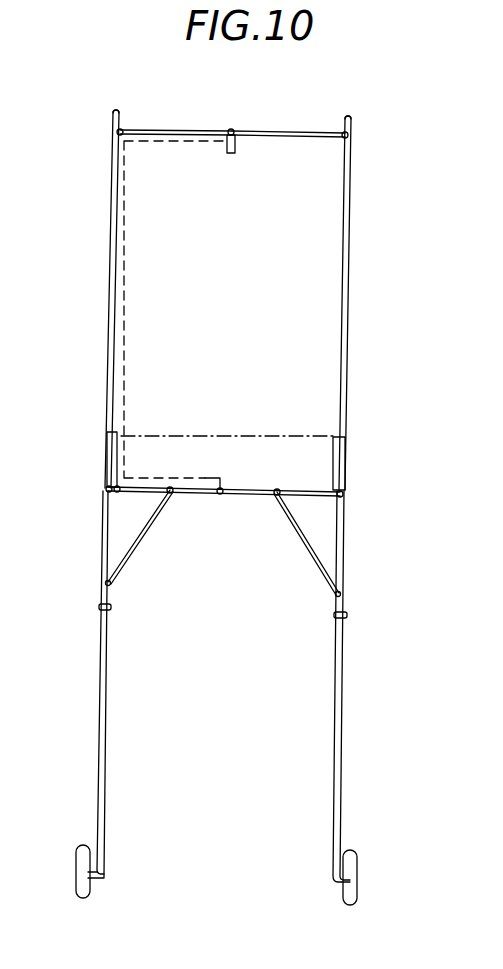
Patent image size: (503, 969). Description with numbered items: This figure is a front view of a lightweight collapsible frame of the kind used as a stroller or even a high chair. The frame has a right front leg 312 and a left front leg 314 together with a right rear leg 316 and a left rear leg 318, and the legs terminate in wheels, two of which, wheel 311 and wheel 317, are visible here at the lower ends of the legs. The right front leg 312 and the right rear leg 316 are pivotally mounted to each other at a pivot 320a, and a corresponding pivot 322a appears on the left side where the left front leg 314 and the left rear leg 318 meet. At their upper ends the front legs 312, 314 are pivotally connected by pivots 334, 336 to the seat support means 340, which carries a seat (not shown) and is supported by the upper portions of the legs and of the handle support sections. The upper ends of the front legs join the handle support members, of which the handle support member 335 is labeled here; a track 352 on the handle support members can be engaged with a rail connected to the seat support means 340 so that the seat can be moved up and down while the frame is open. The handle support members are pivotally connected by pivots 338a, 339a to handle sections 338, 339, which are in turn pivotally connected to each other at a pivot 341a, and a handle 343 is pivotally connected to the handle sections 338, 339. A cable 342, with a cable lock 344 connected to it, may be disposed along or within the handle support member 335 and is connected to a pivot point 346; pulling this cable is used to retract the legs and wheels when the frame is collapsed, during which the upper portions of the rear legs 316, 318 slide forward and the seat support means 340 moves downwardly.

The wheel 311 is at (350, 884).
The right front leg 312 is at (104, 770).
The left front leg 314 is at (344, 770).
The right rear leg 316 is at (109, 714).
The wheel 317 is at (80, 876).
The left rear leg 318 is at (334, 756).
The pivot 320a is at (346, 616).
The left leg collar 322a is at (100, 610).
The pivot 334 is at (108, 487).
The handle support member 335 is at (114, 286).
The pivot 336 is at (344, 495).
The handle section 338 is at (180, 134).
The pivot 338a is at (122, 131).
The handle section 339 is at (286, 138).
The pivot 339a is at (345, 132).
The seat support means 340 is at (302, 441).
The pivot 341a is at (231, 130).
The cable 342 is at (124, 296).
The handle 343 is at (112, 117).
The cable lock 344 is at (228, 154).
The pivot point 346 is at (220, 496).
The track 352 is at (107, 456).